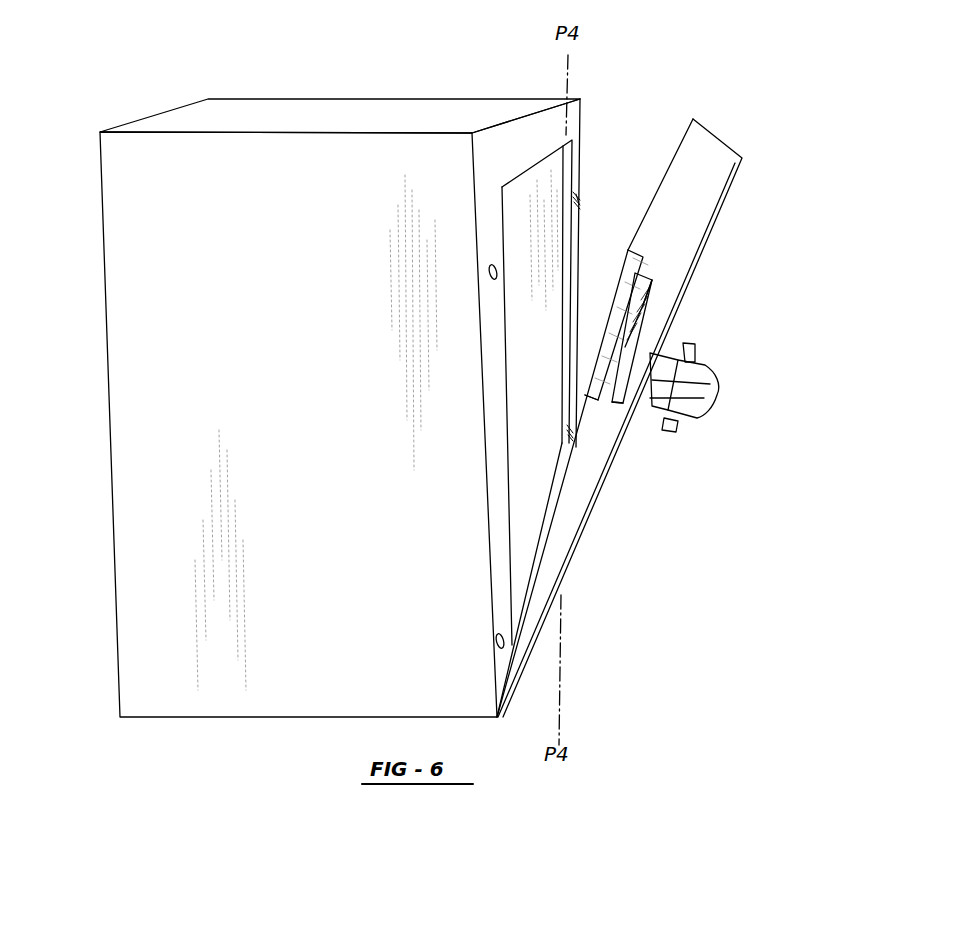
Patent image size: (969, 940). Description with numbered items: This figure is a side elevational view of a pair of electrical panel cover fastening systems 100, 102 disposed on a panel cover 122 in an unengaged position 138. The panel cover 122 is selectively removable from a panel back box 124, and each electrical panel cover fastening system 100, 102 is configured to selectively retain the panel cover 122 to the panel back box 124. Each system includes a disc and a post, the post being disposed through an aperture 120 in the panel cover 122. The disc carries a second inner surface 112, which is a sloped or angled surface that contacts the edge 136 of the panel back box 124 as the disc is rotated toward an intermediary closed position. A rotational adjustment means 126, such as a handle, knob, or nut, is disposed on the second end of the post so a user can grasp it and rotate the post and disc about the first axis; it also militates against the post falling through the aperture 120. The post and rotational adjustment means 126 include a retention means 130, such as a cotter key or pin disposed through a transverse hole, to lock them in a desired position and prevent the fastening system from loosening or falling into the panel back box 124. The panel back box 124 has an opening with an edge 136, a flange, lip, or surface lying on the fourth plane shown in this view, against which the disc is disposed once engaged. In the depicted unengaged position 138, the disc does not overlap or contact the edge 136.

The electrical panel cover fastening system 100 is at (628, 245).
The electrical panel cover fastening system 102 is at (594, 410).
The second inner surface 112 is at (637, 318).
The aperture 120 is at (623, 410).
The panel cover 122 is at (718, 128).
The panel back box 124 is at (103, 320).
The rotational adjustment means 126 is at (705, 397).
The retention means 130 is at (688, 422).
The edge 136 is at (565, 262).
The unengaged position 138 is at (757, 226).